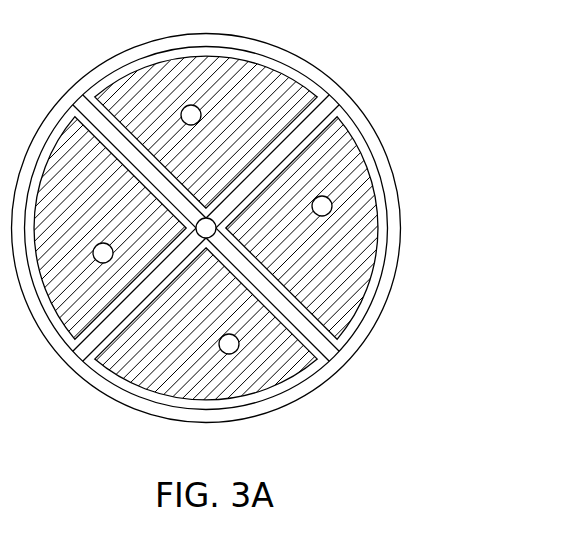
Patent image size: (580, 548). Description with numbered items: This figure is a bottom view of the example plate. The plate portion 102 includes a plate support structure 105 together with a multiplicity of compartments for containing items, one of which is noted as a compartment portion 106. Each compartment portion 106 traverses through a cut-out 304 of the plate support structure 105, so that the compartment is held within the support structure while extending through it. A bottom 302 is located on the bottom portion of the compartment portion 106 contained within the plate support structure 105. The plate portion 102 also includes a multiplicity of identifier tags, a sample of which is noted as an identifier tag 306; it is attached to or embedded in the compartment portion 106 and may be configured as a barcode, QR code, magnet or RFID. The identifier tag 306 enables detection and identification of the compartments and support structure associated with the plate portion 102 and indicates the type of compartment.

The plate portion 102 is at (398, 182).
The plate support structure 105 is at (327, 382).
The compartment portion 106 is at (340, 150).
The bottom 302 is at (338, 238).
The cut-out 304 is at (372, 305).
The identifier tag 306 is at (340, 208).